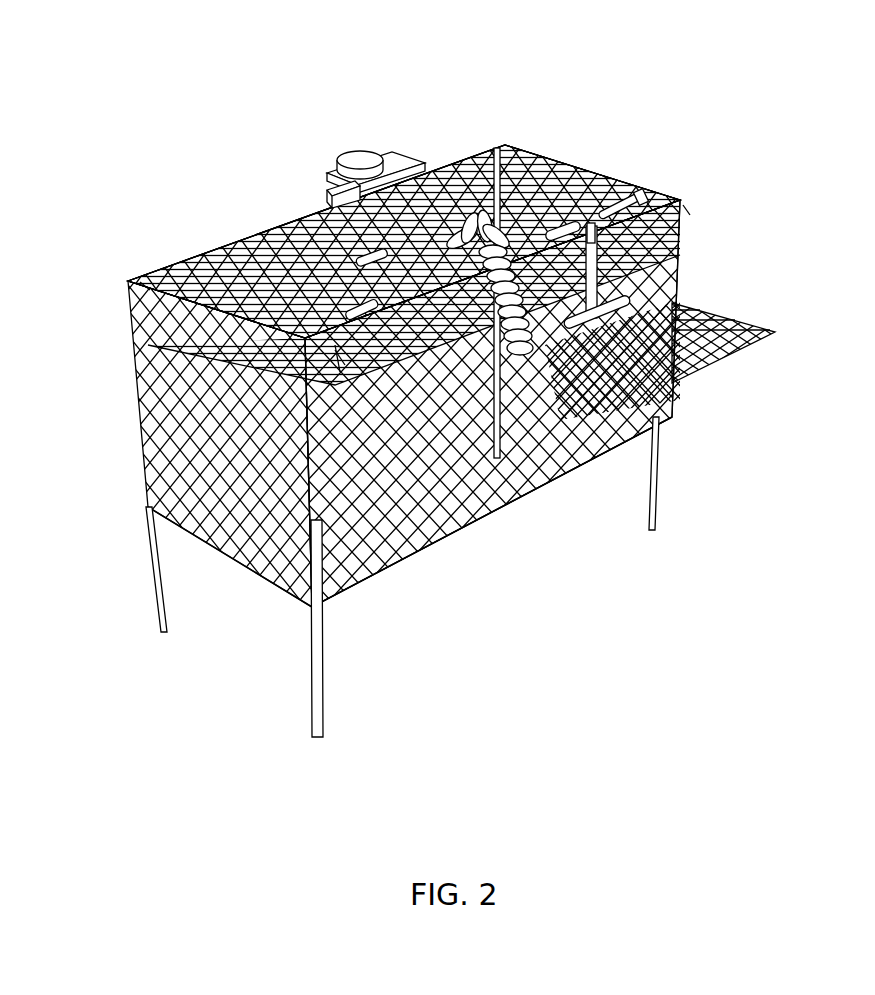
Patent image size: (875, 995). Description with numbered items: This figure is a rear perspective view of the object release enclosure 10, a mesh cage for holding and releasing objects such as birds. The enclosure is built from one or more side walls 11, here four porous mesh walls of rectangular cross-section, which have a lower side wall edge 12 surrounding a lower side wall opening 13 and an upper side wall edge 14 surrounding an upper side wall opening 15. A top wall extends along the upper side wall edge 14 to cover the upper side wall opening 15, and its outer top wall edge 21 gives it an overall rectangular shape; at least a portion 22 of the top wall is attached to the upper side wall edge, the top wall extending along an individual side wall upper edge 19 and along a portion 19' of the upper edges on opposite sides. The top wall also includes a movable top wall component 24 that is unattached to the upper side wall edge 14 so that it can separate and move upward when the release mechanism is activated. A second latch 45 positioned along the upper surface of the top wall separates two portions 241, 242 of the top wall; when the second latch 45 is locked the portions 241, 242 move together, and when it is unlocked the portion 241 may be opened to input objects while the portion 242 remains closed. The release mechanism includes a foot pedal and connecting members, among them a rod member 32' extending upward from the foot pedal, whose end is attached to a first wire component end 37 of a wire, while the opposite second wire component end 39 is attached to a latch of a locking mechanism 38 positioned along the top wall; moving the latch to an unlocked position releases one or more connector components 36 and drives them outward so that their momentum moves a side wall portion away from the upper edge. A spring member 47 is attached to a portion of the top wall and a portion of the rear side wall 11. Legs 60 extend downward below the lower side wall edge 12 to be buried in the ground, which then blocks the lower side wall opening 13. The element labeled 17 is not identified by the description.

The object release enclosure 10 is at (688, 60).
The side walls 11 is at (155, 342).
The lower side wall edge 12 is at (272, 588).
The lower side wall opening 13 is at (519, 516).
The upper side wall edge 14 is at (165, 292).
The upper side wall opening 15 is at (518, 215).
The front mesh panel 17 is at (375, 545).
The individual side wall upper edge 19 is at (202, 483).
The portion of individual side wall upper edge 19' is at (427, 366).
The outer top wall edge 21 is at (640, 195).
The portion of top wall 22 is at (335, 345).
The movable top wall component 24 is at (437, 213).
The first top wall portion 241 is at (225, 268).
The second top wall portion 242 is at (497, 185).
The rod member 32' is at (601, 398).
The connector component 36 is at (356, 160).
The first wire component end 37 is at (650, 210).
The locking mechanism 38 is at (392, 165).
The second wire component end 39 is at (420, 175).
The second latch 45 is at (368, 262).
The spring member 47 is at (525, 355).
The legs 60 is at (665, 470).